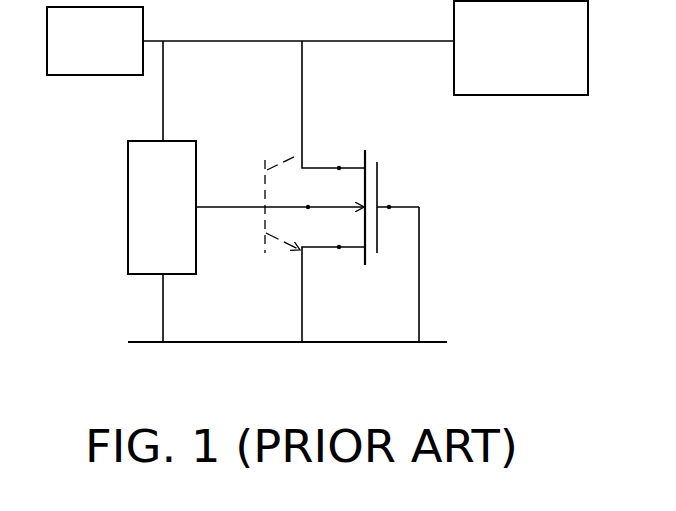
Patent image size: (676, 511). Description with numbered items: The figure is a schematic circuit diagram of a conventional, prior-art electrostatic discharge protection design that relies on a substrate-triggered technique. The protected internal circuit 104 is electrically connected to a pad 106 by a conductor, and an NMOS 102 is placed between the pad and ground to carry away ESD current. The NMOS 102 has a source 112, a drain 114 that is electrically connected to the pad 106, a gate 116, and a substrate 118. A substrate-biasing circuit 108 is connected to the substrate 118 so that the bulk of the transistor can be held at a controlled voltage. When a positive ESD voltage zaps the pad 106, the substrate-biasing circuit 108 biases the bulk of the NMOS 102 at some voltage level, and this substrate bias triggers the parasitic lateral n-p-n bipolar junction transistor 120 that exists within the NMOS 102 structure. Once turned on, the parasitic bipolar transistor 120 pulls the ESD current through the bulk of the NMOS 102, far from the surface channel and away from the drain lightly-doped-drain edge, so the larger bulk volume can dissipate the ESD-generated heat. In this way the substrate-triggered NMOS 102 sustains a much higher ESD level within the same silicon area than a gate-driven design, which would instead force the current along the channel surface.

The NMOS 102 is at (390, 143).
The internal circuit 104 is at (492, 59).
The pad 106 is at (72, 59).
The substrate-biasing circuit 108 is at (182, 219).
The source 112 is at (335, 293).
The drain 114 is at (340, 105).
The gate 116 is at (405, 182).
The substrate 118 is at (290, 204).
The parasitic lateral n-p-n bipolar junction transistor 120 is at (255, 233).